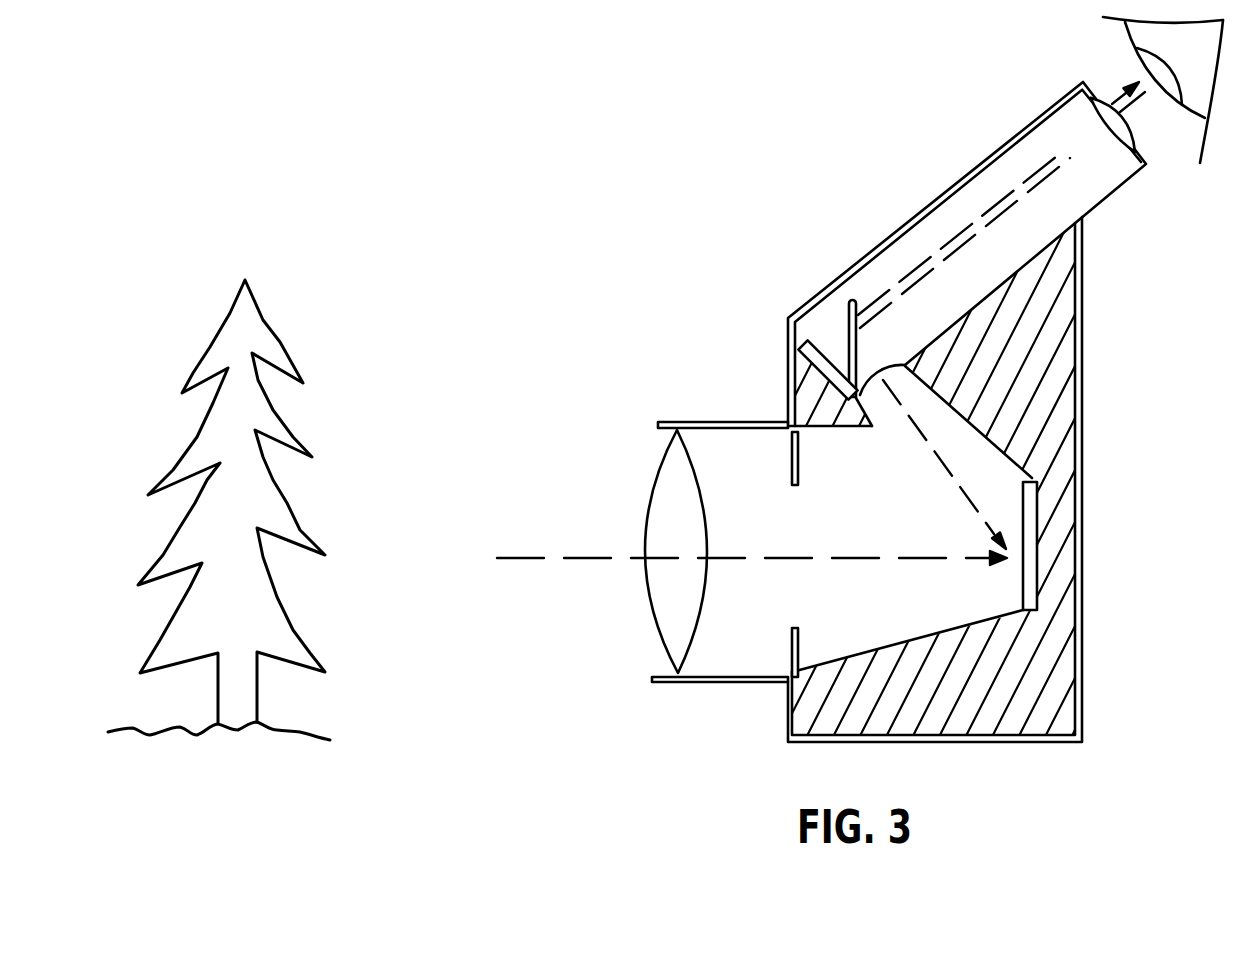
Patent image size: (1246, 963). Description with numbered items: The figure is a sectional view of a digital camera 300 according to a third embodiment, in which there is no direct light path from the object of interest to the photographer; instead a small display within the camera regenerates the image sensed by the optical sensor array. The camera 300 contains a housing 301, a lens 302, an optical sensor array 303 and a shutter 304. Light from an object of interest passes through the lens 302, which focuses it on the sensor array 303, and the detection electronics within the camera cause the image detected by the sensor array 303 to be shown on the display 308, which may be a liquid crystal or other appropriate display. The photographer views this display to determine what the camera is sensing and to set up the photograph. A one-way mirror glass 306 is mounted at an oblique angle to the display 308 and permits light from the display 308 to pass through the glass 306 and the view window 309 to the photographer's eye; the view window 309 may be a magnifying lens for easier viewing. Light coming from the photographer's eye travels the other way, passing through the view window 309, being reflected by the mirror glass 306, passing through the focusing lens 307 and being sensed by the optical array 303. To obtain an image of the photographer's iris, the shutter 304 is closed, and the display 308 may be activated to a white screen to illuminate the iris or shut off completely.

The camera 300 is at (704, 184).
The housing 301 is at (1081, 700).
The lens 302 is at (657, 627).
The optical sensor array 303 is at (1040, 549).
The shutter 304 is at (790, 655).
The one-way mirror glass 306 is at (853, 300).
The focusing lens 307 is at (884, 383).
The display 308 is at (815, 373).
The view window 309 is at (1123, 127).